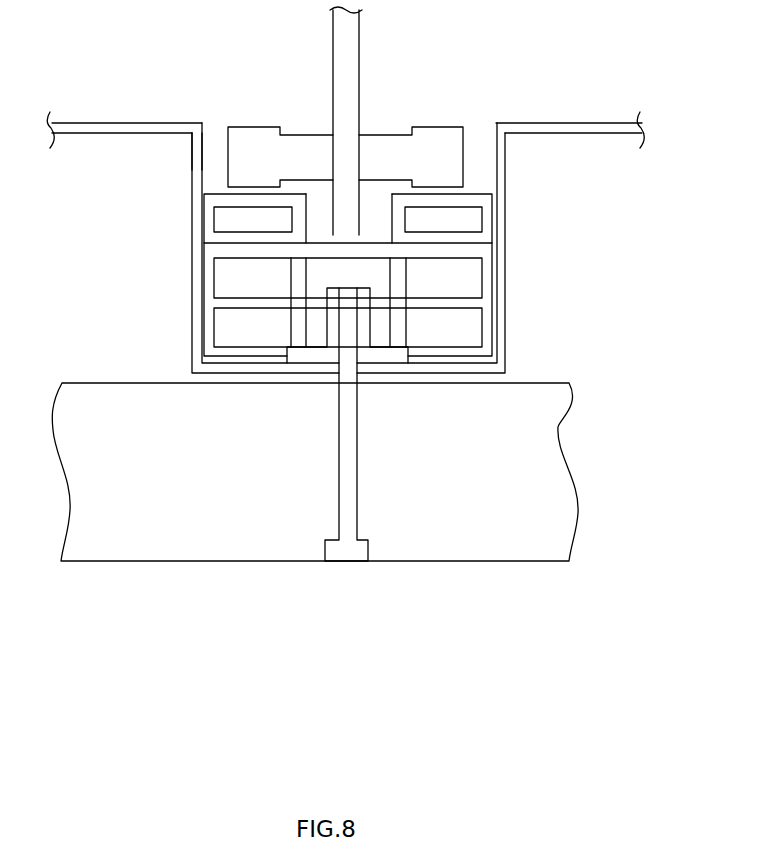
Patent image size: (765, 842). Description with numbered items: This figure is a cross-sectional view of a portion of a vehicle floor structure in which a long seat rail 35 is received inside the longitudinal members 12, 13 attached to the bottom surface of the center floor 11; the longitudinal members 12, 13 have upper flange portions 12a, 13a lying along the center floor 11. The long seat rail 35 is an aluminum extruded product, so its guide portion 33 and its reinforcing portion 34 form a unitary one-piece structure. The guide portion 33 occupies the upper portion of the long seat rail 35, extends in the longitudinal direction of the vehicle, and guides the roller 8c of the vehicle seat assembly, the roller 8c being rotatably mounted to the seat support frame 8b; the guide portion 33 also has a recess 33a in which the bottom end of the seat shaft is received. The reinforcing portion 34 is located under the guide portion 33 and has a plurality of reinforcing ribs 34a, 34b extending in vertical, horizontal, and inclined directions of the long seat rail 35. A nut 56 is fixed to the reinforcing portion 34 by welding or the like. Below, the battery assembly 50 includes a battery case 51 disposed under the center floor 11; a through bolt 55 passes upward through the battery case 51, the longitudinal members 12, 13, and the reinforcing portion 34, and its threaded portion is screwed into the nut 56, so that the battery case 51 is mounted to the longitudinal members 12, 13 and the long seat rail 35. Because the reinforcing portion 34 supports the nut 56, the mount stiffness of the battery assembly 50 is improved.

The seat support frame 8b is at (358, 74).
The roller 8c is at (238, 160).
The center floor 11 is at (591, 124).
The longitudinal member 12 is at (280, 248).
The longitudinal member 13 is at (180, 240).
The housing flange 12a is at (206, 105).
The housing flange 13a is at (213, 138).
The guide portion 33 is at (390, 154).
The recess 33a is at (385, 211).
The reinforcing portion 34 is at (347, 290).
The reinforcing rib 34a is at (262, 297).
The reinforcing rib 34b is at (297, 325).
The long seat rail 35 is at (374, 210).
The battery assembly 50 is at (315, 471).
The battery case 51 is at (207, 535).
The through bolt 55 is at (357, 470).
The nut 56 is at (364, 321).